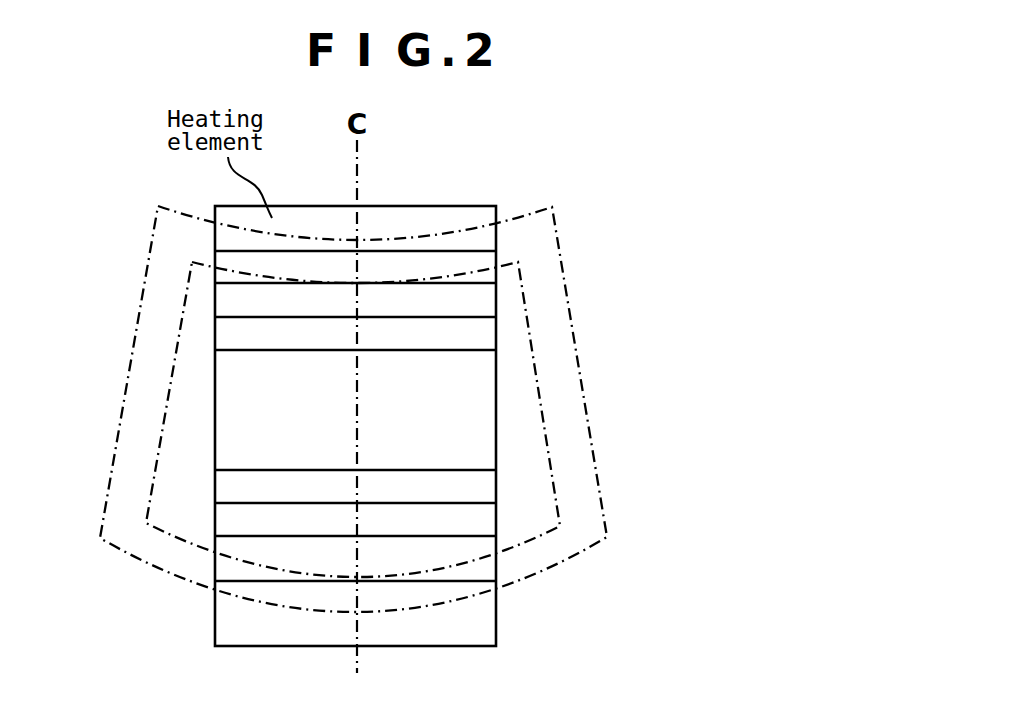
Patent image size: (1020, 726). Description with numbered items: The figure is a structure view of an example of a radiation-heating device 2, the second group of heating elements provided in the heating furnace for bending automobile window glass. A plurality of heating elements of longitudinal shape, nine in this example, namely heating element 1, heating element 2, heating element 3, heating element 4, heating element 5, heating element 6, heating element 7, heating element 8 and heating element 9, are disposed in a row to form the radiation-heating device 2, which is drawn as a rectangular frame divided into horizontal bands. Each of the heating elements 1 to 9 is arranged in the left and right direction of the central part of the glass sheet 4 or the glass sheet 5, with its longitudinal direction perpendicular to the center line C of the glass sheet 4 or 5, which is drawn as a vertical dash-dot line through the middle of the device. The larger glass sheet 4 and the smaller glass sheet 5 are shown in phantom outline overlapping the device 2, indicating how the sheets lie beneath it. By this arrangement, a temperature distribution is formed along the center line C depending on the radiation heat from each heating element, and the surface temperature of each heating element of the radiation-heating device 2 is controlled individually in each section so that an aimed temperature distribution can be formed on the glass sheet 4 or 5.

The heating element 1 is at (225, 240).
The radiation-heating device 2 is at (418, 204).
The heating element 3 is at (225, 305).
The glass sheet 4 is at (565, 277).
The glass sheet 5 is at (540, 337).
The heating element 6 is at (225, 492).
The heating element 7 is at (225, 520).
The heating element 8 is at (225, 570).
The heating element 9 is at (225, 635).